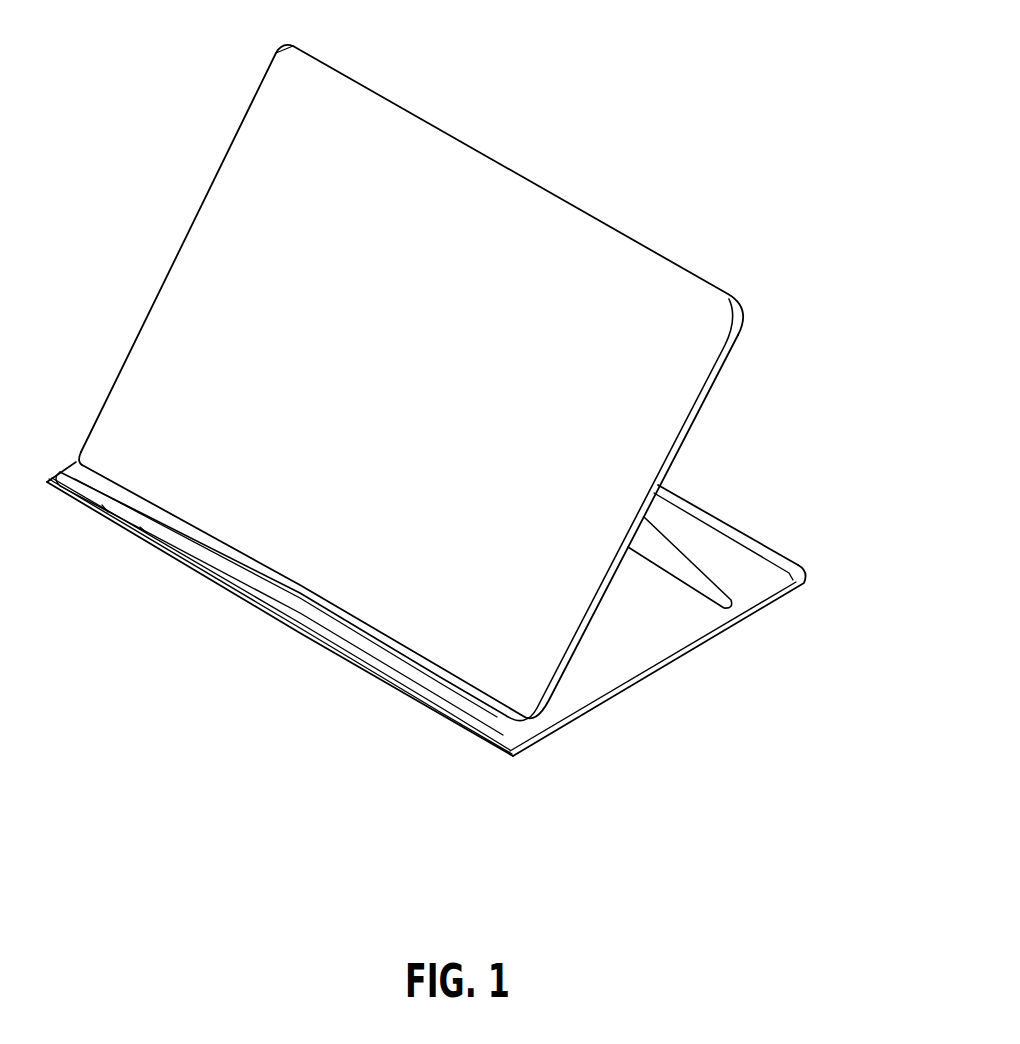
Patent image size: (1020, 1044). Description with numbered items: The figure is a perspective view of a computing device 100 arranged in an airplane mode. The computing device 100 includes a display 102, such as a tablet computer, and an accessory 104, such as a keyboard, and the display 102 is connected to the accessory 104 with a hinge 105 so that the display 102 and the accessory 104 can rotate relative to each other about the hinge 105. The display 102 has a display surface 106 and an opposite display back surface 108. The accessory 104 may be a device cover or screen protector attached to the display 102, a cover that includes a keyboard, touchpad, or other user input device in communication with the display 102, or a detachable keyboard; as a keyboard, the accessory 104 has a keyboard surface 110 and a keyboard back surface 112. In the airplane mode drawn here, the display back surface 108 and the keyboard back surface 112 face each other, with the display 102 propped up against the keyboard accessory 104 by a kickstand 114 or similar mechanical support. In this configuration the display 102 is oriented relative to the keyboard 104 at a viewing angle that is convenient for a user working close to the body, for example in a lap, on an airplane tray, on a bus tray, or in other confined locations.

The computing device 100 is at (436, 401).
The display 102 is at (401, 382).
The accessory 104 is at (433, 619).
The hinge 105 is at (527, 750).
The display surface 106 is at (270, 127).
The display back surface 108 is at (397, 92).
The keyboard surface 110 is at (766, 621).
The keyboard back surface 112 is at (725, 560).
The kickstand 114 is at (694, 550).